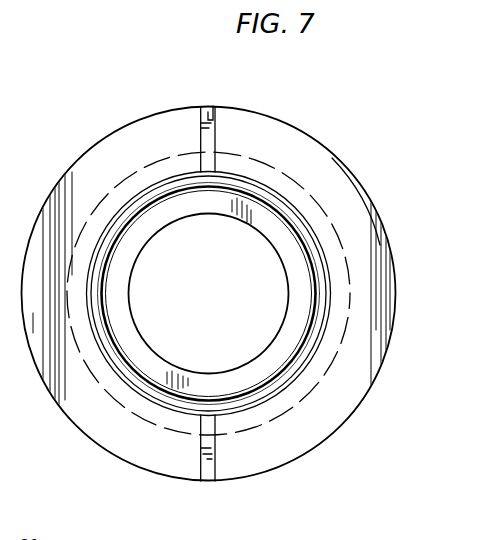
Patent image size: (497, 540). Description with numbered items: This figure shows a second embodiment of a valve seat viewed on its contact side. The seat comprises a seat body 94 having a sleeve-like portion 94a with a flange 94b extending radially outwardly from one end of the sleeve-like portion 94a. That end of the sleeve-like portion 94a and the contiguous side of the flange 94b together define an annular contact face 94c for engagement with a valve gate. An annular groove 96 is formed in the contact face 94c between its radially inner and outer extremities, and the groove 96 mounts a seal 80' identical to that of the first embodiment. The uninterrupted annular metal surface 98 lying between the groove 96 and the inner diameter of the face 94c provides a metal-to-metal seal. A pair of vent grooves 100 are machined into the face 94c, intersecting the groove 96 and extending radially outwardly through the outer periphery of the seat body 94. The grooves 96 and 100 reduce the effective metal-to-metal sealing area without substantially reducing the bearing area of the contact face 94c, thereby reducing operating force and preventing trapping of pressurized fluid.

The seat body 94 is at (335, 142).
The sleeve-like portion 94a is at (305, 398).
The flange 94b is at (352, 207).
The annular contact face 94c is at (267, 141).
The annular groove 96 is at (293, 352).
The uninterrupted annular metal surface 98 is at (198, 206).
The vent grooves 100 is at (213, 103).
The seal 80' is at (149, 343).